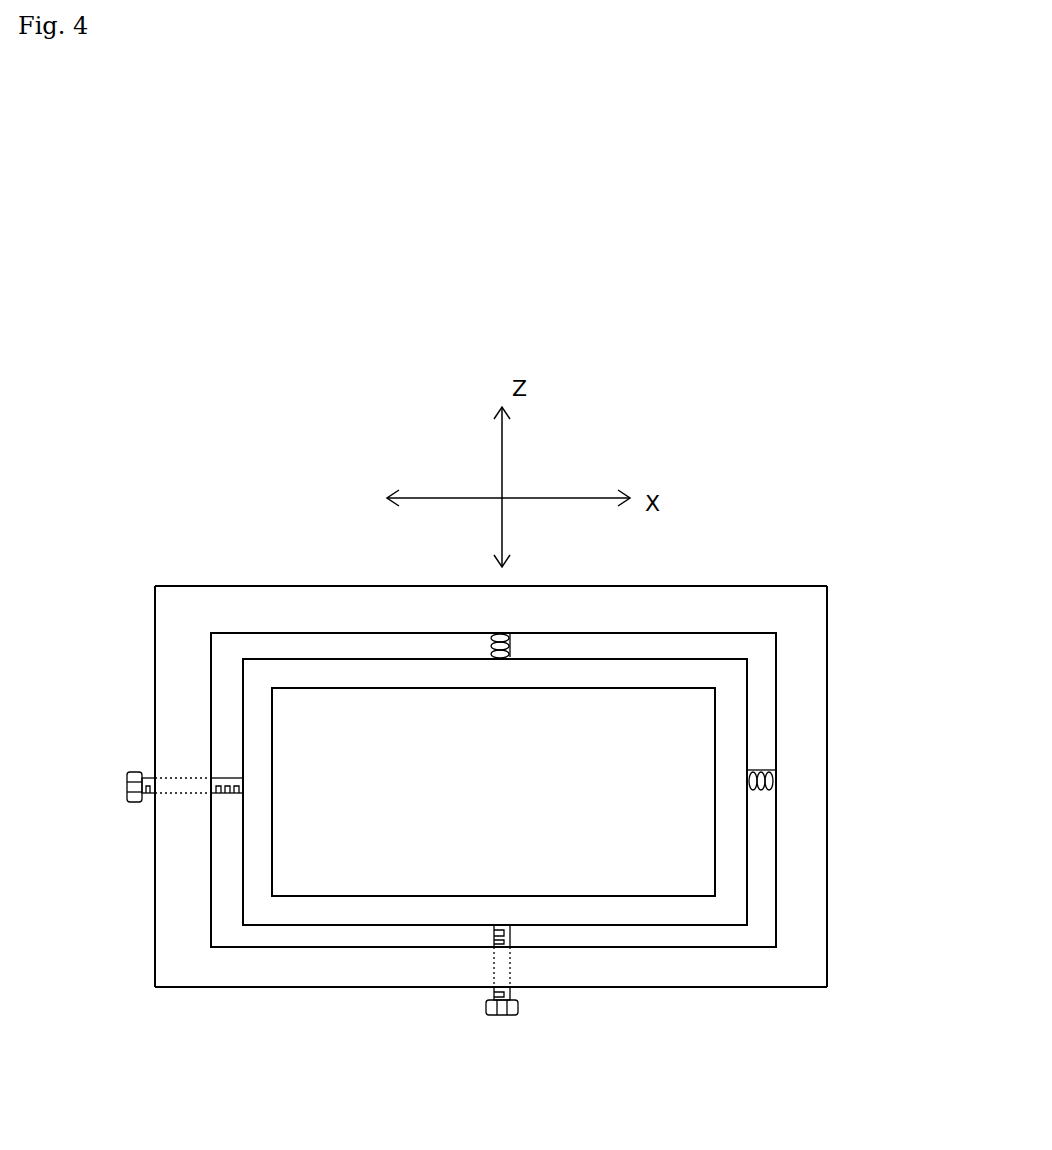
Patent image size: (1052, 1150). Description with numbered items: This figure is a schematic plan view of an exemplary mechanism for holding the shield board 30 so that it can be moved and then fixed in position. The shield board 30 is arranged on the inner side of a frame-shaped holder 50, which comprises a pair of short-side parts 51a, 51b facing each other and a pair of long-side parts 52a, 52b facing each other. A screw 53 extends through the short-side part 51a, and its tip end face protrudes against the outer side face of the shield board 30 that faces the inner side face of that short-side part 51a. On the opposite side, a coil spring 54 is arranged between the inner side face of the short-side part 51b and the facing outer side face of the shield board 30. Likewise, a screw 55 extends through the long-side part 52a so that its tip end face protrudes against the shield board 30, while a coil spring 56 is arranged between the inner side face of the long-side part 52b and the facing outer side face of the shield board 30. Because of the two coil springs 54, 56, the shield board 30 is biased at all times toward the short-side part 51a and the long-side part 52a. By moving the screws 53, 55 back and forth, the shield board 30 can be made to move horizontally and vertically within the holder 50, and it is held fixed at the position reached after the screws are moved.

The shield board 30 is at (291, 660).
The frame-shaped holder 50 is at (811, 568).
The short-side part 51a is at (162, 674).
The short-side part 51b is at (818, 672).
The long-side part 52a is at (717, 1000).
The long-side part 52b is at (732, 602).
The screw 53 is at (137, 805).
The coil spring 54 is at (770, 776).
The screw 55 is at (502, 1018).
The coil spring 56 is at (512, 645).